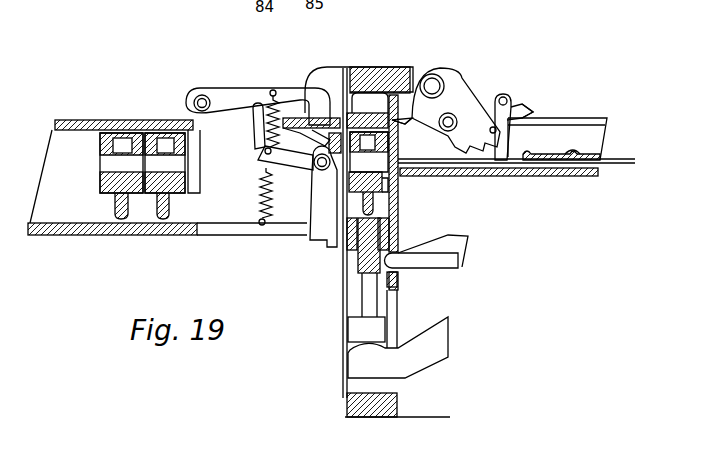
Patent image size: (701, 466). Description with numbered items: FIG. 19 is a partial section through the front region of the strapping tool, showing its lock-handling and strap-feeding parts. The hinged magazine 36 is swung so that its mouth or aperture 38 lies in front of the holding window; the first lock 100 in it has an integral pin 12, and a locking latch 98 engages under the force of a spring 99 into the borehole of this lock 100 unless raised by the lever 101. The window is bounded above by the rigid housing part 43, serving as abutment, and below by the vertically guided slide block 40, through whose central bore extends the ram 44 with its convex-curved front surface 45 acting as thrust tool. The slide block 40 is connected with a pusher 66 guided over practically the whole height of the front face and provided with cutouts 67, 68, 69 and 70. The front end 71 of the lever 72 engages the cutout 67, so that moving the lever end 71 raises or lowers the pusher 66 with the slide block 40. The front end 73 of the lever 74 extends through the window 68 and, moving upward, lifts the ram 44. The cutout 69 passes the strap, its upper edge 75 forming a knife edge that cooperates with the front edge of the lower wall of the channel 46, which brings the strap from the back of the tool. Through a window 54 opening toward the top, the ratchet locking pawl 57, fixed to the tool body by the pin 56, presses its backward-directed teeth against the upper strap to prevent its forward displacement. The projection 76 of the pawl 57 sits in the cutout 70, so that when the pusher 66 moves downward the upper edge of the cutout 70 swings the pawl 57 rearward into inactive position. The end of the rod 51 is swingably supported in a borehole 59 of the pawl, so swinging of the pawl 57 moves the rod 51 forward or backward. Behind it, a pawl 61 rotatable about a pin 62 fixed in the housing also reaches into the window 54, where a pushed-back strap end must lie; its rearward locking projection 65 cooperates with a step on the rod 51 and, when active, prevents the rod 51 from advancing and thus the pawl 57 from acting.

The magazine 36 is at (80, 122).
The locking latch 98 is at (248, 90).
The first lock 100 is at (302, 135).
The lever 101 is at (317, 207).
The slide block 40 is at (347, 250).
The spring 99 is at (253, 208).
The rigid housing part 43 is at (345, 115).
The cutout 70 is at (380, 112).
The pusher 66 is at (392, 100).
The pin 12 is at (375, 207).
The cutout 69 is at (392, 185).
The convex-curved front surface 45 is at (398, 228).
The ram 44 is at (365, 275).
The front end of lever 73 is at (360, 330).
The window 68 is at (393, 315).
The lever 74 is at (433, 340).
The front end of lever 71 is at (453, 258).
The lever 72 is at (467, 240).
The cutout 67 is at (413, 273).
The pin 56 is at (432, 80).
The ratchet locking pawl 57 is at (462, 100).
The projection 76 is at (405, 115).
The mouth or aperture 38 is at (483, 150).
The upper edge 75 is at (400, 176).
The rod 51 is at (592, 118).
The borehole 59 is at (505, 96).
The pin 62 is at (512, 98).
The pawl 61 is at (522, 107).
The locking projection 65 is at (538, 112).
The window 54 is at (542, 157).
The channel 46 is at (585, 163).